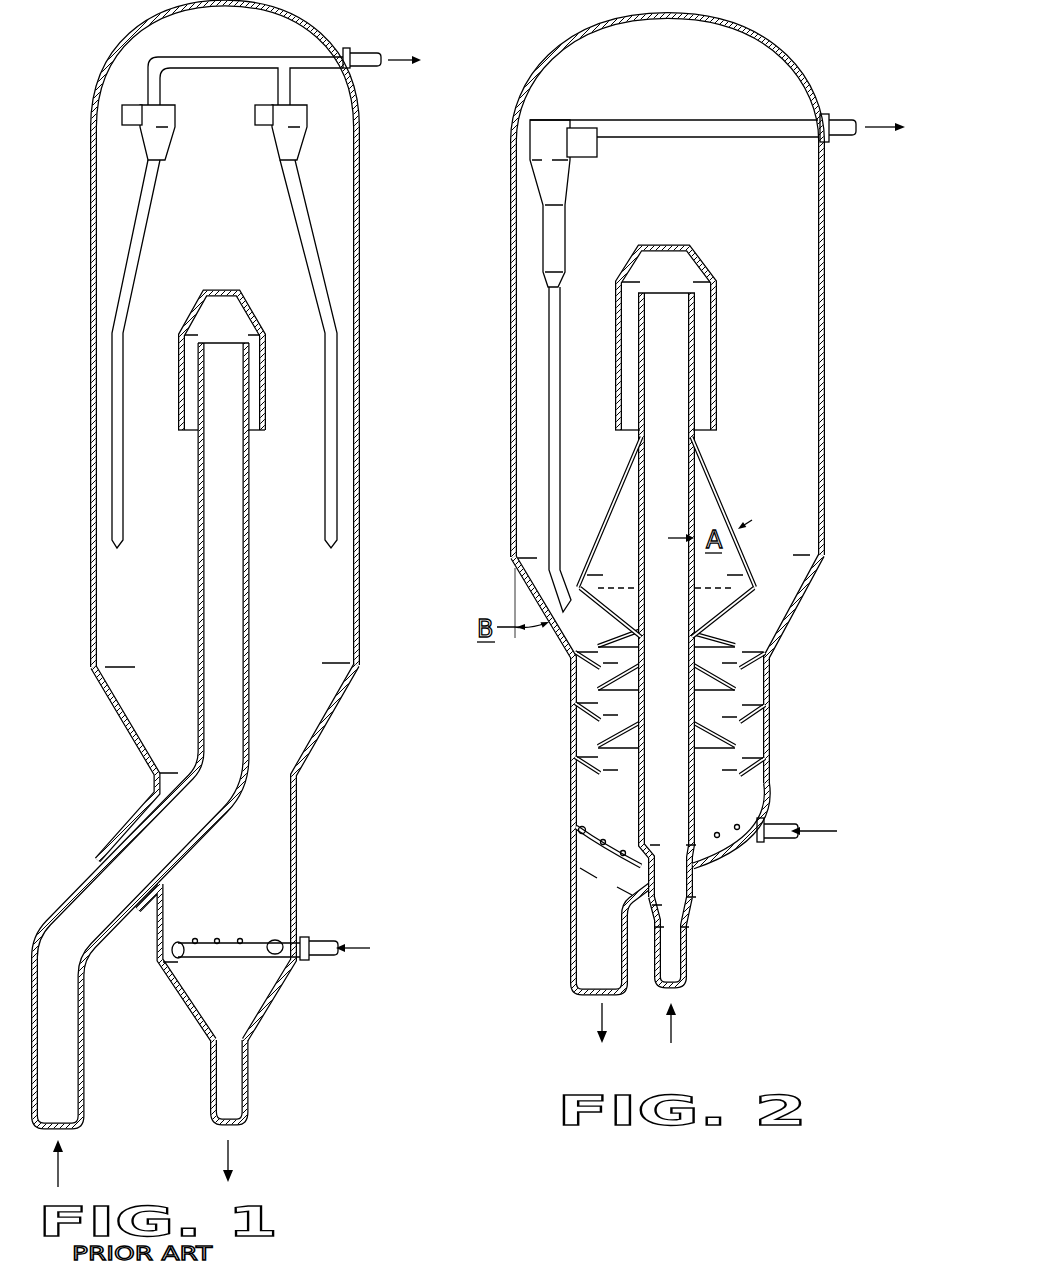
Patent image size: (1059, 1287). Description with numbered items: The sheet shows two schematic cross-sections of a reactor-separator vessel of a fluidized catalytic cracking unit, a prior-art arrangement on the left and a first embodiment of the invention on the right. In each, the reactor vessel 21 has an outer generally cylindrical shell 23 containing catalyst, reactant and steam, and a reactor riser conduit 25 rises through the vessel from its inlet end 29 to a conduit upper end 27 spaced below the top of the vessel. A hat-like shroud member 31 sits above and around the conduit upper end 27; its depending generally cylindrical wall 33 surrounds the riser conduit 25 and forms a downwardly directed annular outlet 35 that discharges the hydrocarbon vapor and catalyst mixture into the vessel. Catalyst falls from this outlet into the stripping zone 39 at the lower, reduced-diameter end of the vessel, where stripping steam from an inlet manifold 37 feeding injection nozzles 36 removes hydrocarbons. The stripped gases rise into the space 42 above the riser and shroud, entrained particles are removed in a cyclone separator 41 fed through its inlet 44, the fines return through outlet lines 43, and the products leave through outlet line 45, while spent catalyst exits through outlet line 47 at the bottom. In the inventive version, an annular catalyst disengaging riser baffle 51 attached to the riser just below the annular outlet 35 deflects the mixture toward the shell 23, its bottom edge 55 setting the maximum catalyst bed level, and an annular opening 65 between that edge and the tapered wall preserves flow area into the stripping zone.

In FIG. 1, the reactor vessel 21 is at (135, 30).
In FIG. 2, the reactor vessel 21 is at (577, 40).
In FIG. 1, the outer generally cylindrical shell 23 is at (90, 548).
In FIG. 2, the outer generally cylindrical shell 23 is at (822, 420).
In FIG. 1, the reactor riser conduit 25 is at (198, 583).
In FIG. 2, the reactor riser conduit 25 is at (637, 502).
In FIG. 1, the conduit upper end 27 is at (237, 342).
In FIG. 2, the conduit upper end 27 is at (680, 293).
In FIG. 1, the inlet end 29 is at (82, 1122).
In FIG. 2, the inlet end 29 is at (592, 992).
In FIG. 1, the hat-like shroud member 31 is at (192, 303).
In FIG. 2, the hat-like shroud member 31 is at (718, 295).
In FIG. 1, the depending generally cylindrical wall 33 is at (178, 375).
In FIG. 2, the depending generally cylindrical wall 33 is at (616, 352).
In FIG. 1, the downwardly directed annular outlet 35 is at (255, 428).
In FIG. 2, the downwardly directed annular outlet 35 is at (705, 436).
In FIG. 1, the injection nozzles 36 is at (215, 940).
In FIG. 2, the injection nozzles 36 is at (702, 848).
In FIG. 1, the inlet manifold 37 is at (270, 940).
In FIG. 2, the inlet manifold 37 is at (723, 853).
In FIG. 1, the stripping zone 39 is at (287, 715).
In FIG. 2, the stripping zone 39 is at (727, 700).
In FIG. 1, the cyclone separator 41 is at (272, 133).
In FIG. 2, the cyclone separator 41 is at (571, 178).
In FIG. 1, the space 42 is at (238, 227).
In FIG. 2, the space 42 is at (783, 362).
In FIG. 1, the outlet lines 43 is at (112, 306).
In FIG. 2, the outlet lines 43 is at (548, 418).
In FIG. 1, the cyclone inlet 44 is at (130, 107).
In FIG. 2, the cyclone inlet 44 is at (598, 143).
In FIG. 1, the outlet line 45 is at (367, 50).
In FIG. 2, the outlet line 45 is at (848, 117).
In FIG. 1, the outlet line 47 is at (243, 1118).
In FIG. 2, the outlet line 47 is at (676, 984).
In FIG. 2, the annular catalyst disengaging riser baffle 51 is at (720, 503).
In FIG. 2, the bottom edge 55 is at (757, 585).
In FIG. 2, the annular opening 65 is at (762, 588).